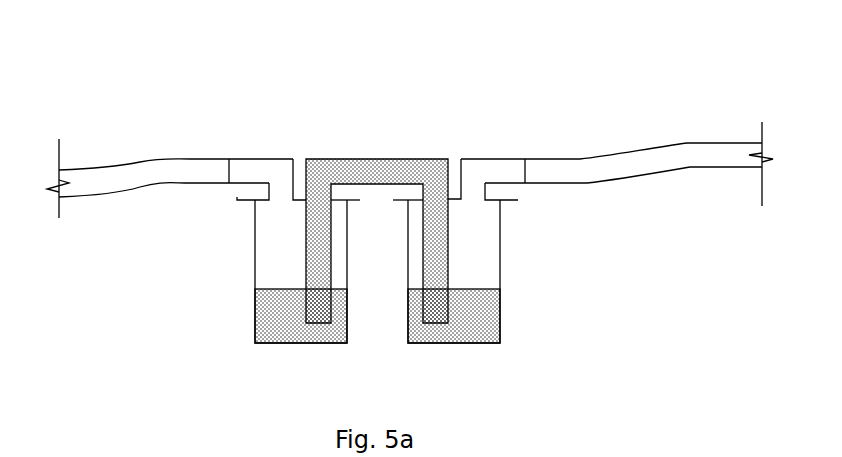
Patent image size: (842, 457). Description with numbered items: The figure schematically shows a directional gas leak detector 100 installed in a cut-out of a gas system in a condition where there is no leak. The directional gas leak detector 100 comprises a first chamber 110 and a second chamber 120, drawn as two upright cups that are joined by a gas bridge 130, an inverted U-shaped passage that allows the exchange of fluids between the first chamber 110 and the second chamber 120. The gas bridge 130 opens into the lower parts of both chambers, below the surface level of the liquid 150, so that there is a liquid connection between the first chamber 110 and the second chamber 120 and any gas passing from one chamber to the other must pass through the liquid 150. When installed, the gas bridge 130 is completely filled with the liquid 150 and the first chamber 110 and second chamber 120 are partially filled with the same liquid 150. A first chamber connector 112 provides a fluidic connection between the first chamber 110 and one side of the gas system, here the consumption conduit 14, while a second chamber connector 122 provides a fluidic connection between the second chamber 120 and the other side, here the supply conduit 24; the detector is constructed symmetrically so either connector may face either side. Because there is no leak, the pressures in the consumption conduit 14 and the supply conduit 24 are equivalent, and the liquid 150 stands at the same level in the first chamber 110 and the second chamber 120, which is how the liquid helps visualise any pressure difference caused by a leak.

The directional gas leak detector 100 is at (535, 77).
The supply conduit 24 is at (107, 177).
The consumption conduit 14 is at (681, 157).
The second chamber connector 122 is at (257, 162).
The first chamber connector 112 is at (493, 168).
The gas bridge 130 is at (387, 165).
The second chamber 120 is at (275, 245).
The first chamber 110 is at (475, 243).
The liquid 150 is at (285, 320).